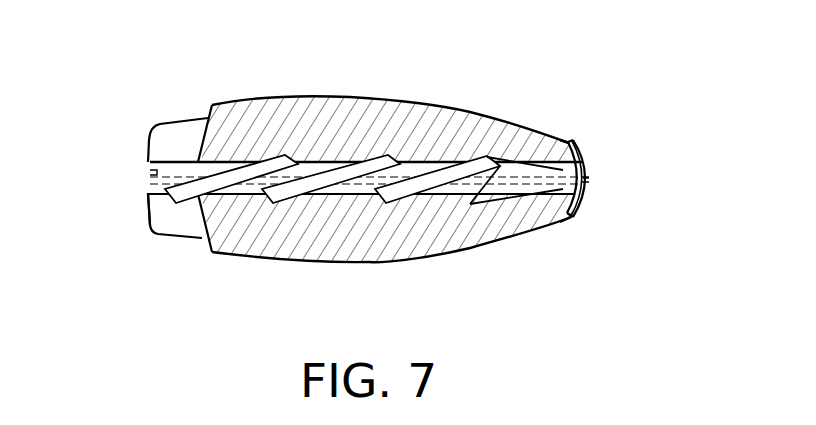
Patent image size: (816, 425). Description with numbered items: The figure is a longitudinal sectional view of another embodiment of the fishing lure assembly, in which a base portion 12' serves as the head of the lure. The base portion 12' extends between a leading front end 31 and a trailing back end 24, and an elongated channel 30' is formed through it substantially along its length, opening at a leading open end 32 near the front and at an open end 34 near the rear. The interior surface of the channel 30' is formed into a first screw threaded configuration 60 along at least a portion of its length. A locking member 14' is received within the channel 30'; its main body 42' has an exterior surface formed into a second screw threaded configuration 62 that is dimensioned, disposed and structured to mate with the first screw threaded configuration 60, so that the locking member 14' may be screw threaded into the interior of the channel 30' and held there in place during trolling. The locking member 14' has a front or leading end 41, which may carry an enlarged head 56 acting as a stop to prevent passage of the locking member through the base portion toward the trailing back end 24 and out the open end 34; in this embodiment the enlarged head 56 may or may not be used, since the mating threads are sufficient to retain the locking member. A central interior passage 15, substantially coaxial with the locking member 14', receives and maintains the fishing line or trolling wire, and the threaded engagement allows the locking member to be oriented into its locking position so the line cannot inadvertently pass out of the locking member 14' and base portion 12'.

The base portion 12' is at (365, 132).
The locking member 14' is at (661, 182).
The interior passage 15 is at (147, 170).
The trailing back end 24 is at (181, 118).
The elongated channel 30' is at (282, 233).
The leading front end 31 is at (571, 118).
The leading open end 32 is at (574, 137).
The open end 34 is at (147, 192).
The front or leading end 41 is at (608, 220).
The main body 42' is at (498, 231).
The enlarged head 56 is at (589, 158).
The first screw threaded configuration 60 is at (300, 160).
The second screw threaded configuration 62 is at (410, 190).